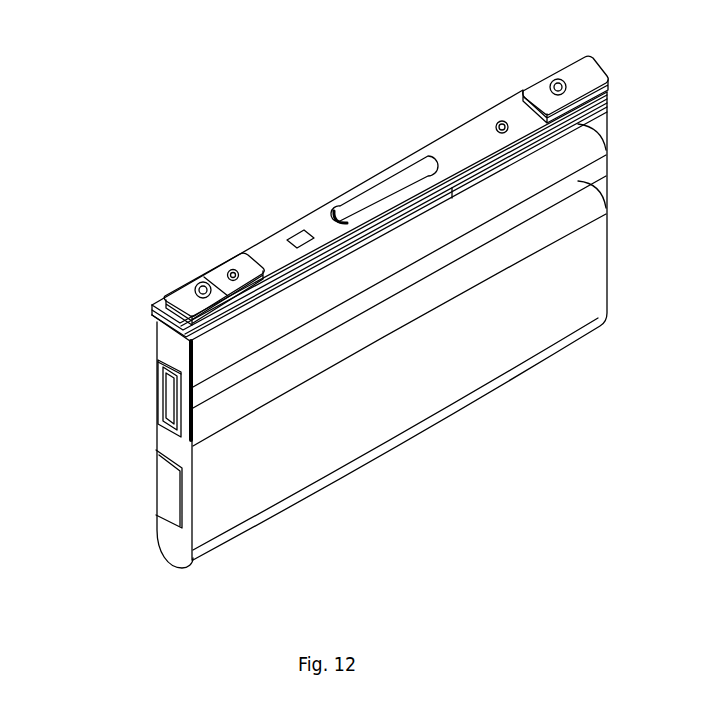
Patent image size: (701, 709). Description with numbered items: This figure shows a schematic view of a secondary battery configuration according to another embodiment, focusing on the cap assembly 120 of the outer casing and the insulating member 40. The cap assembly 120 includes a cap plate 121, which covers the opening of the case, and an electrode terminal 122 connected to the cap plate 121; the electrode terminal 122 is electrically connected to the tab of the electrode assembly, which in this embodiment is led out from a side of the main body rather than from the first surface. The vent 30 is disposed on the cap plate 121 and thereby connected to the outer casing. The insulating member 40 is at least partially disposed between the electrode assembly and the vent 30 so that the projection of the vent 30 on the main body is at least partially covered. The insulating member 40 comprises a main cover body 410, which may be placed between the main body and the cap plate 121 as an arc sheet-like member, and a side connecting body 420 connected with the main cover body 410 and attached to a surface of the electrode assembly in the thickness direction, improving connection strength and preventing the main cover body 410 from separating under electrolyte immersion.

The cap assembly 120 is at (503, 75).
The cap plate 121 is at (507, 103).
The electrode terminal 122 is at (558, 72).
The vent 30 is at (380, 192).
The insulating member 40 is at (50, 330).
The main cover body 410 is at (205, 355).
The side connecting body 420 is at (203, 396).